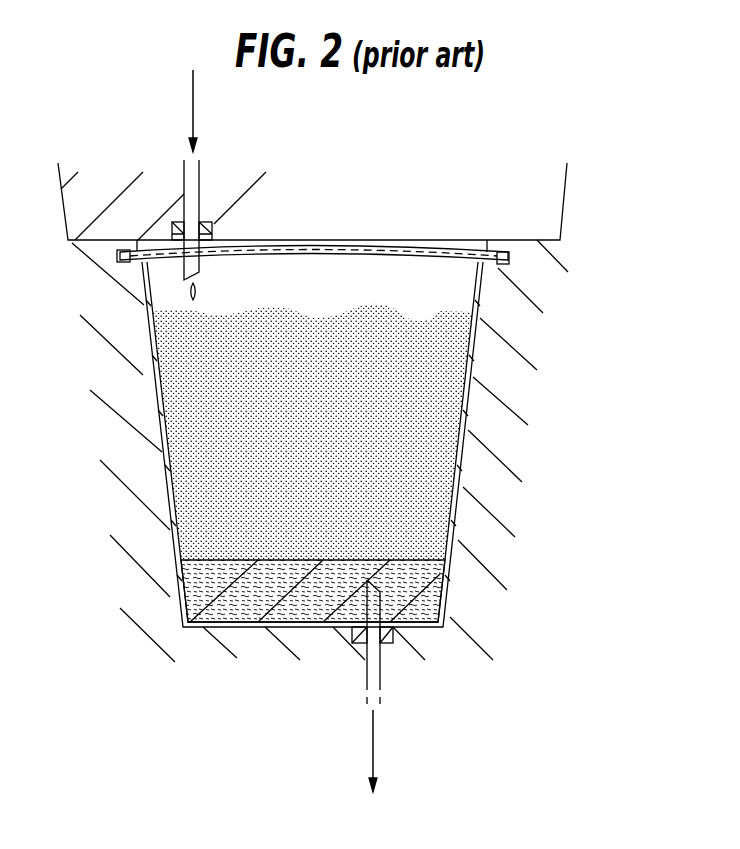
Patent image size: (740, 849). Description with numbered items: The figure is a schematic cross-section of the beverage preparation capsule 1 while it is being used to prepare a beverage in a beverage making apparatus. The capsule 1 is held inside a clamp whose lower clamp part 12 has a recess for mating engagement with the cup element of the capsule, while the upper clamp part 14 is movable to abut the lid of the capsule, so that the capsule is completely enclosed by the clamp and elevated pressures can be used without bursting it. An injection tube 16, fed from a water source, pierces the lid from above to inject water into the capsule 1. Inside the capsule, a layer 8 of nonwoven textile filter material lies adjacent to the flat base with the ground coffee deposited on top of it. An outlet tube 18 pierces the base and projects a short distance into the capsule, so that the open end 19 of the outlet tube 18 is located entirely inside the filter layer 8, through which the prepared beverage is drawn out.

The beverage preparation capsule 1 is at (477, 350).
The layer of nonwoven textile filter material 8 is at (190, 582).
The lower clamp part 12 is at (485, 477).
The upper clamp part 14 is at (568, 186).
The injection tube 16 is at (200, 190).
The outlet tube 18 is at (380, 676).
The open end of the outlet tube 19 is at (368, 582).